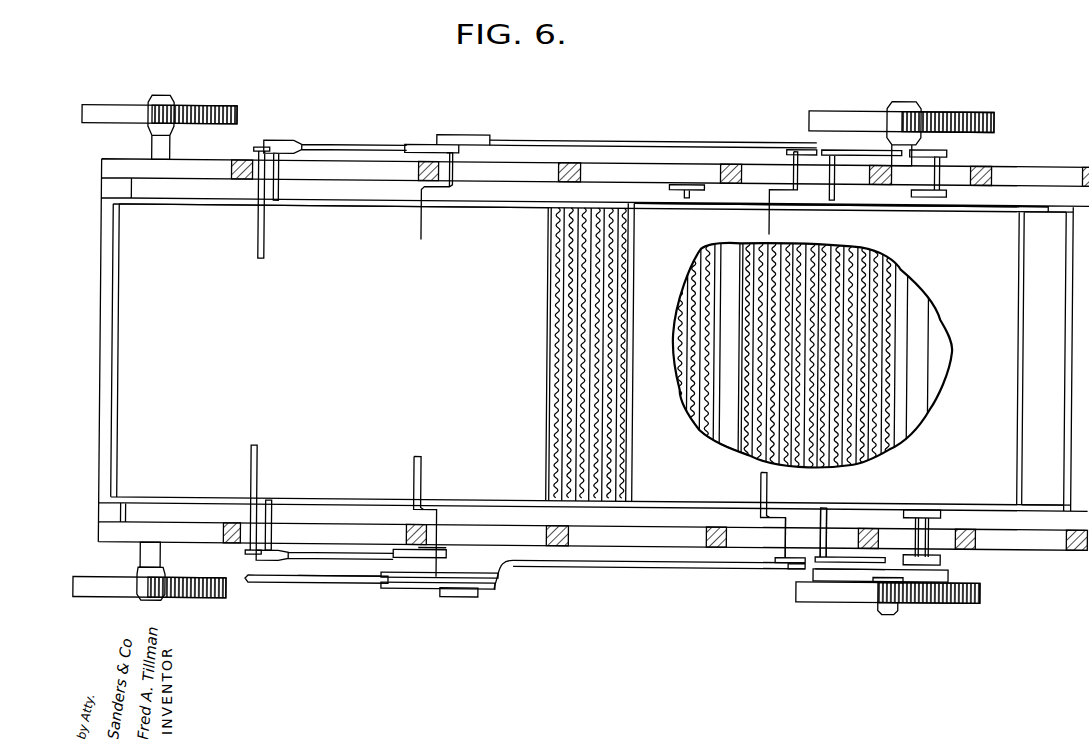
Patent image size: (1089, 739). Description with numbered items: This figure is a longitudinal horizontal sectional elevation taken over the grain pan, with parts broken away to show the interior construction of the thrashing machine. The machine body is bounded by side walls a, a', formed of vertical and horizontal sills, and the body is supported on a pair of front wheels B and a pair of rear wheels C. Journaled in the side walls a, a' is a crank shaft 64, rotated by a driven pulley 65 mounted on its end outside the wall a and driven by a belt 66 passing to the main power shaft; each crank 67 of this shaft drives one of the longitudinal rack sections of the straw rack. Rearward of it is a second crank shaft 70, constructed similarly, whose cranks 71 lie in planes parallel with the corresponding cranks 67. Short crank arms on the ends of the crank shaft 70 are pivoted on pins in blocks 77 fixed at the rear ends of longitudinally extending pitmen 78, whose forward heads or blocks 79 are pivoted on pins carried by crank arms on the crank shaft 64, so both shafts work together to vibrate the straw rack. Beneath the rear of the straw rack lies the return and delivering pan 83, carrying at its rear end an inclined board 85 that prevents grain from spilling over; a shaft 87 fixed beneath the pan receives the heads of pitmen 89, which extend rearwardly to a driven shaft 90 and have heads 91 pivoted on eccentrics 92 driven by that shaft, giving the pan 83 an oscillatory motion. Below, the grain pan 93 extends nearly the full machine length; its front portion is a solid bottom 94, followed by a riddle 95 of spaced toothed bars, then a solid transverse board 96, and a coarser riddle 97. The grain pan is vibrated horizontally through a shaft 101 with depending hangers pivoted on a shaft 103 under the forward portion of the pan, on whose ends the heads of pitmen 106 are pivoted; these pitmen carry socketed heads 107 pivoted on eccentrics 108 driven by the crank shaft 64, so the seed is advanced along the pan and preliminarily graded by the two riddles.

The front wheels B is at (205, 104).
The rear wheels C is at (958, 112).
The side wall a' is at (371, 186).
The side wall a is at (324, 516).
The pitmen 78 is at (652, 141).
The blocks 77 is at (808, 140).
The pitmen 89 is at (843, 160).
The riddle 95 is at (577, 370).
The grain pan 93 is at (478, 500).
The solid bottom 94 is at (333, 314).
The riddle 97 is at (890, 278).
The solid transverse board 96 is at (718, 438).
The return and delivering pan 83 is at (826, 336).
The inclined board 85 is at (1044, 358).
The shaft 101 is at (258, 470).
The shaft 103 is at (272, 505).
The cranks 67 is at (424, 487).
The socketed heads 107 is at (398, 552).
The eccentrics 108 is at (442, 552).
The crank shaft 64 is at (445, 567).
The driven pulley 65 is at (406, 590).
The belt 66 is at (347, 585).
The pitmen 106 is at (333, 560).
The heads or blocks 79 is at (466, 593).
The cranks 71 is at (770, 490).
The crank shaft 70 is at (786, 540).
The shaft 87 is at (823, 542).
The heads 91 is at (911, 512).
The eccentrics 92 is at (920, 522).
The driven shaft 90 is at (933, 527).